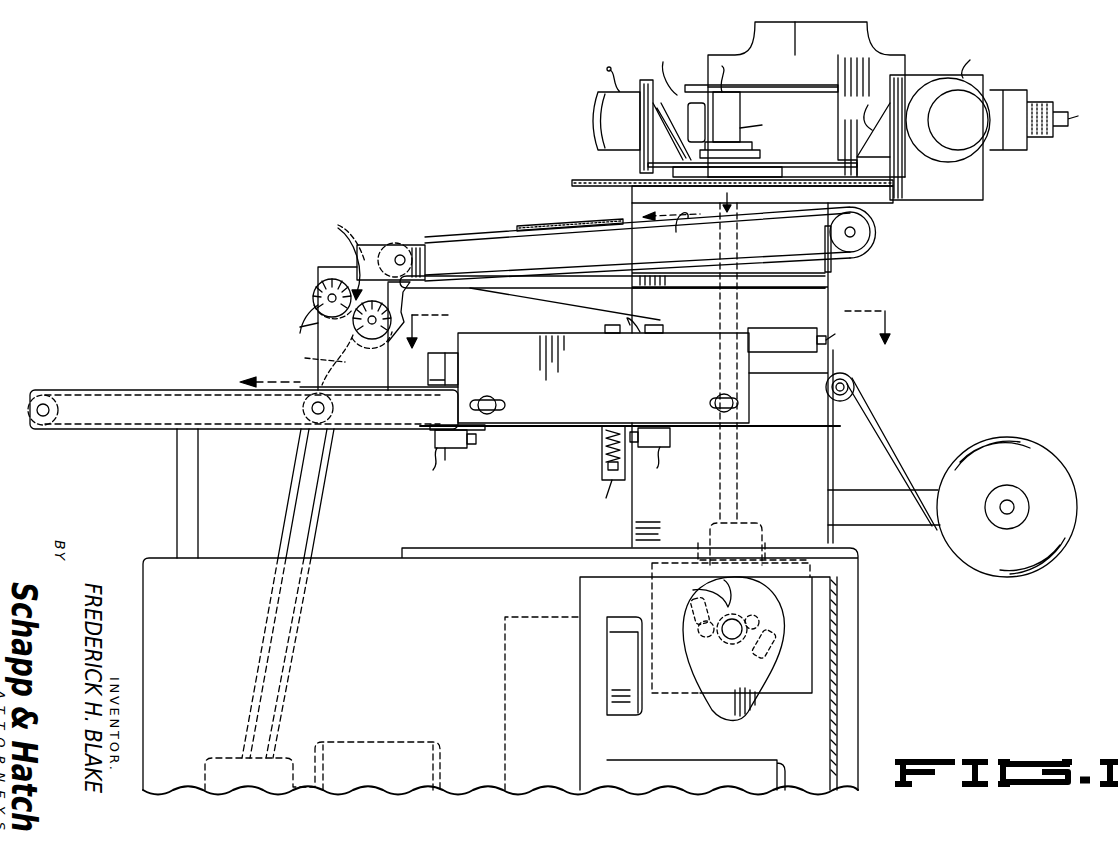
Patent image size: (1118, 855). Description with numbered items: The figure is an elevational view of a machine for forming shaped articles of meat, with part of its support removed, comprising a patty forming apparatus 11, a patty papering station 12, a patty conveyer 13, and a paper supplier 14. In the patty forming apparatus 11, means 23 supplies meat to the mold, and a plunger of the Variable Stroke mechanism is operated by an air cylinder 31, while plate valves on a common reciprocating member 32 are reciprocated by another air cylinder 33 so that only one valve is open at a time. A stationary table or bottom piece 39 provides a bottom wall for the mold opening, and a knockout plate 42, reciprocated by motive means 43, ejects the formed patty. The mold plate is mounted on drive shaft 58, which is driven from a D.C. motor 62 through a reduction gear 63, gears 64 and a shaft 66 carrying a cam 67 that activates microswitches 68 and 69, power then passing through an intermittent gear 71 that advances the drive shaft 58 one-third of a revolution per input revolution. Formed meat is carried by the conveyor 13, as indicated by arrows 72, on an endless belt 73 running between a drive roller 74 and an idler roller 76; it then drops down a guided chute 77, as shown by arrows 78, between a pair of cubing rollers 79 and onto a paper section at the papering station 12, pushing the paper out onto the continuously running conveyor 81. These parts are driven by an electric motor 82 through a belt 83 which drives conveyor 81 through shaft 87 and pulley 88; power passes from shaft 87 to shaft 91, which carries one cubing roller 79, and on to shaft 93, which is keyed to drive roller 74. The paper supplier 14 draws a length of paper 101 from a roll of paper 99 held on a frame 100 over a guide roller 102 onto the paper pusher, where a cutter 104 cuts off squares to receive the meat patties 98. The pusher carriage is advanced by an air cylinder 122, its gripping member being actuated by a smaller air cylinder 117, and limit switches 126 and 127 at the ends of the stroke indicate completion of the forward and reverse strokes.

The patty forming apparatus 11 is at (990, 200).
The patty papering station 12 is at (280, 361).
The patty conveyer 13 is at (516, 208).
The paper supplier 14 is at (885, 393).
The means for supplying meat 23 is at (888, 50).
The air cylinder 31 is at (1000, 90).
The reciprocating member 32 is at (677, 93).
The air cylinder 33 is at (606, 113).
The table or bottom piece 39 is at (885, 192).
The knockout plate 42 is at (772, 170).
The motive means 43 is at (741, 112).
The drive shaft 58 is at (745, 500).
The D.C. motor 62 is at (765, 765).
The reduction gear 63 is at (505, 628).
The gears 64 is at (765, 604).
The shaft 66 is at (712, 592).
The cam 67 is at (730, 645).
The microswitch 68 is at (682, 617).
The microswitch 69 is at (780, 655).
The intermittent gear 71 is at (808, 628).
The arrows 72 is at (683, 222).
The endless belt 73 is at (478, 235).
The drive roller 74 is at (388, 272).
The idler roller 76 is at (870, 240).
The guided chute 77 is at (370, 328).
The arrows 78 is at (337, 256).
The cubing rollers 79 is at (323, 308).
The conveyor 81 is at (155, 388).
The electric motor 82 is at (370, 742).
The belt 83 is at (316, 514).
The shaft 87 is at (315, 412).
The pulley 88 is at (334, 430).
The shaft 91 is at (398, 296).
The shaft 93 is at (406, 259).
The meat patties 98 is at (570, 222).
The roll of paper 99 is at (1040, 450).
The frame 100 is at (1003, 512).
The length of paper 101 is at (893, 445).
The guide roller 102 is at (828, 392).
The cutter 104 is at (447, 346).
The air cylinder 117 is at (604, 460).
The air cylinder 122 is at (770, 330).
The limit switch 126 is at (453, 450).
The limit switch 127 is at (668, 450).